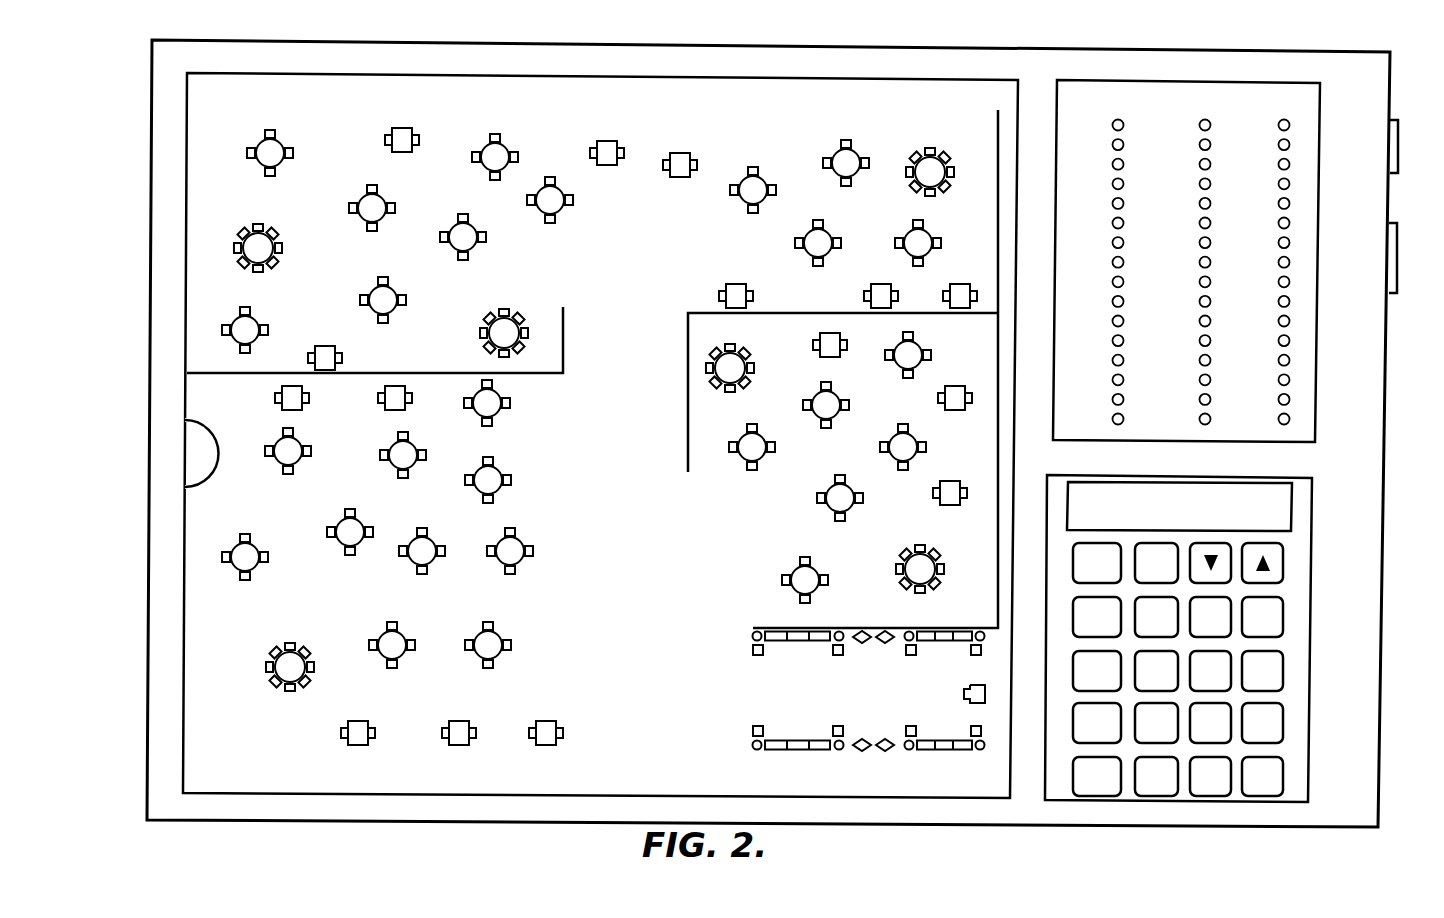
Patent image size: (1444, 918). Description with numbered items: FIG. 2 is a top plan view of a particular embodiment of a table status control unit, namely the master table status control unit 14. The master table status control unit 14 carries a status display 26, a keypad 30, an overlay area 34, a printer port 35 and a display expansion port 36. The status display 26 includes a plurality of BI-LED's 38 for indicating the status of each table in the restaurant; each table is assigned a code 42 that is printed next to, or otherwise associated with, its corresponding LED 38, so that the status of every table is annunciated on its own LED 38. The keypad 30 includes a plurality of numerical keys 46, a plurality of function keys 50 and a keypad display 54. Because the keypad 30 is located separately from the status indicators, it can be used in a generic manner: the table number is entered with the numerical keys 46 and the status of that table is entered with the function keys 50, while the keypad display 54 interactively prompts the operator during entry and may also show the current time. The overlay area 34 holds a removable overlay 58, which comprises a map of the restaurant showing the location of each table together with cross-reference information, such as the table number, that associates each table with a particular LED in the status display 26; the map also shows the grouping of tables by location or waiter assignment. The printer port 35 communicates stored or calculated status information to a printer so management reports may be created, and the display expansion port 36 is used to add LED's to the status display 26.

The master table status control unit 14 is at (1390, 75).
The status display 26 is at (1210, 261).
The keypad 30 is at (1184, 623).
The overlay area 34 is at (236, 66).
The printer port 35 is at (1397, 242).
The display expansion port 36 is at (1398, 140).
The BI-LED 38 is at (1124, 126).
The code 42 is at (1091, 127).
The numerical keys 46 is at (1073, 662).
The function keys 50 is at (1283, 614).
The keypad display 54 is at (1075, 481).
The removable overlay 58 is at (458, 75).